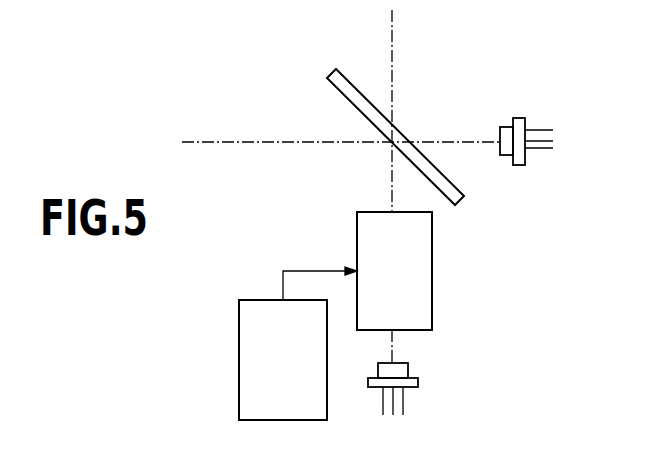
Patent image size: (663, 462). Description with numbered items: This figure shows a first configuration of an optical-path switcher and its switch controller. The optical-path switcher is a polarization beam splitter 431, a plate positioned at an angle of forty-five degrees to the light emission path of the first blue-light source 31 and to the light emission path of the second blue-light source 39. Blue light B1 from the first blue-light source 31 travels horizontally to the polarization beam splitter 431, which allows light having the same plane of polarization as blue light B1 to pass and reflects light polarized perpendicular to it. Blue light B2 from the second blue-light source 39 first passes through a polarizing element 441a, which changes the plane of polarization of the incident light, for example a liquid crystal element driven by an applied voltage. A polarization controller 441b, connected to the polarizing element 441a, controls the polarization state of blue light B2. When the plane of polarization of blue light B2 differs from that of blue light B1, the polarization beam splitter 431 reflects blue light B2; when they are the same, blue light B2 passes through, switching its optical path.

The polarization beam splitter 431 is at (350, 80).
The first blue-light source 31 is at (516, 118).
The polarizing element 441a is at (356, 232).
The polarization controller 441b is at (238, 358).
The second blue-light source 39 is at (419, 382).
The blue light B1 is at (447, 141).
The blue light B2 is at (394, 33).